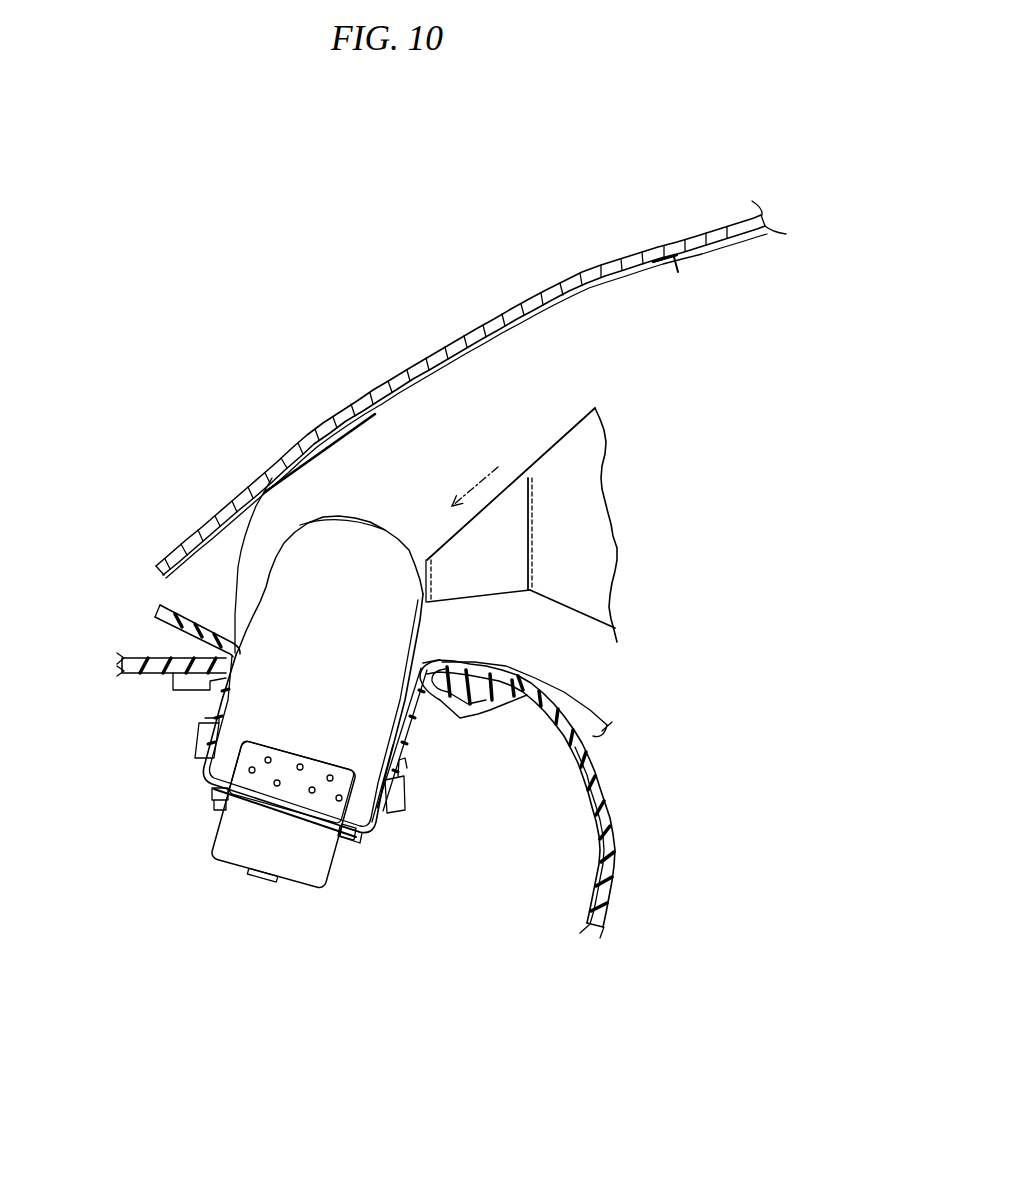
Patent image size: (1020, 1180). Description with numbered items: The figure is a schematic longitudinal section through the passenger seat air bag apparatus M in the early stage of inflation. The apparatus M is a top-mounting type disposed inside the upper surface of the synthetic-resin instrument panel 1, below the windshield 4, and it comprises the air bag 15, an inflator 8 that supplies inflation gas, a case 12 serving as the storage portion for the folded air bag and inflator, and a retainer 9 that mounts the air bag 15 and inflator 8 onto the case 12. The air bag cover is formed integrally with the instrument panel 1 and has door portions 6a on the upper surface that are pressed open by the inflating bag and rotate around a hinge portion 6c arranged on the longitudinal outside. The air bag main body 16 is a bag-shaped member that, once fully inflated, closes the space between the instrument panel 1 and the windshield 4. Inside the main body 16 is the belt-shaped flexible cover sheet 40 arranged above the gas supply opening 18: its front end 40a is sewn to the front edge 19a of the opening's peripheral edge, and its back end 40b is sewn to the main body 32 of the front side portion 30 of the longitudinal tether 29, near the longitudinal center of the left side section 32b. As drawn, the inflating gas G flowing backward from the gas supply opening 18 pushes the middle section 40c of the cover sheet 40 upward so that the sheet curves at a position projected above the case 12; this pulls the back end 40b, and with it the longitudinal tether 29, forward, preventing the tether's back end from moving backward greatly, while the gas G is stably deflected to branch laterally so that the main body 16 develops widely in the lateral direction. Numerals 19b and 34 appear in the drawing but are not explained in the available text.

The instrument panel 1 is at (620, 904).
The windshield 4 is at (328, 430).
The door portion 6a is at (181, 632).
The hinge portion 6c is at (414, 694).
The inflator 8 is at (296, 893).
The retainer 9 is at (225, 762).
The case 12 is at (388, 830).
The air bag 15 is at (640, 270).
The air bag main body 16 is at (640, 270).
The gas supply opening 18 is at (344, 836).
The front edge 19a is at (210, 790).
The bolt 19b is at (370, 838).
The longitudinal tether 29 is at (565, 425).
The front side portion 30 is at (514, 475).
The main body 32 is at (514, 475).
The left side section 32b is at (453, 593).
The door glass 34 is at (583, 608).
The cover sheet 40 is at (324, 638).
The front end 40a is at (204, 775).
The back end 40b is at (433, 581).
The middle section 40c is at (368, 517).
The inflating gas G is at (352, 576).
The passenger seat air bag apparatus M is at (140, 895).